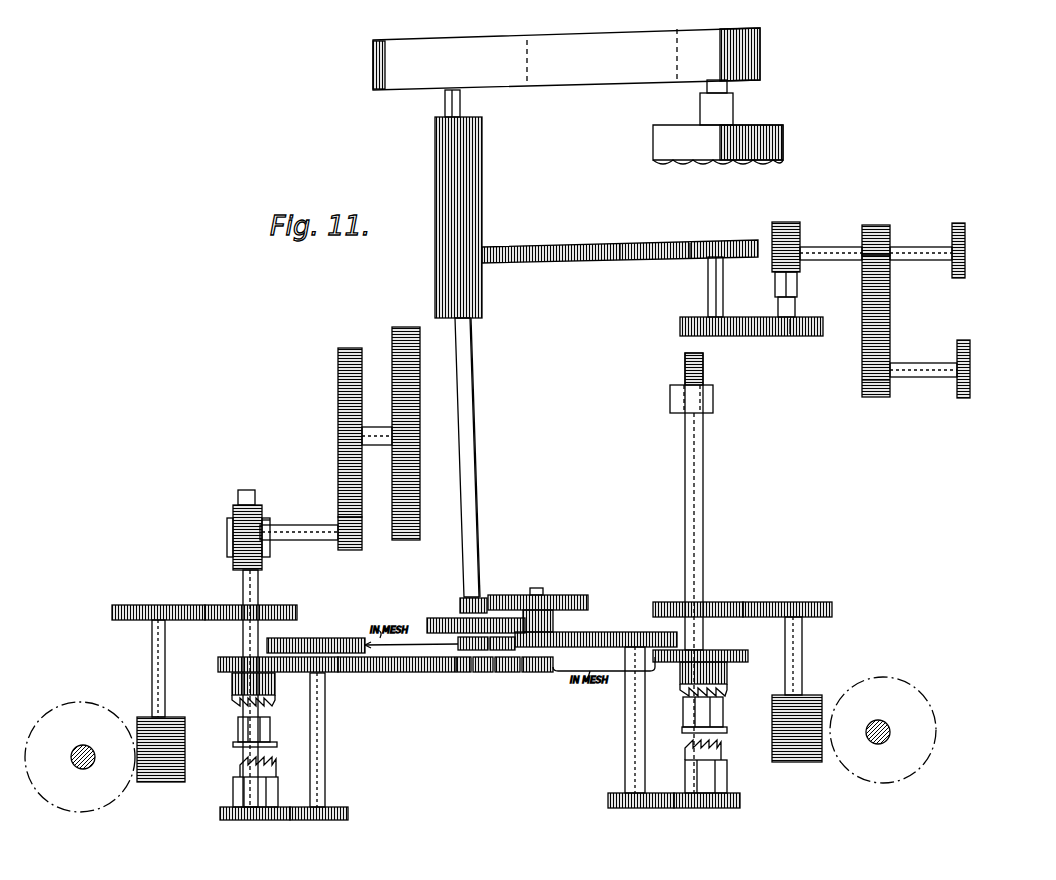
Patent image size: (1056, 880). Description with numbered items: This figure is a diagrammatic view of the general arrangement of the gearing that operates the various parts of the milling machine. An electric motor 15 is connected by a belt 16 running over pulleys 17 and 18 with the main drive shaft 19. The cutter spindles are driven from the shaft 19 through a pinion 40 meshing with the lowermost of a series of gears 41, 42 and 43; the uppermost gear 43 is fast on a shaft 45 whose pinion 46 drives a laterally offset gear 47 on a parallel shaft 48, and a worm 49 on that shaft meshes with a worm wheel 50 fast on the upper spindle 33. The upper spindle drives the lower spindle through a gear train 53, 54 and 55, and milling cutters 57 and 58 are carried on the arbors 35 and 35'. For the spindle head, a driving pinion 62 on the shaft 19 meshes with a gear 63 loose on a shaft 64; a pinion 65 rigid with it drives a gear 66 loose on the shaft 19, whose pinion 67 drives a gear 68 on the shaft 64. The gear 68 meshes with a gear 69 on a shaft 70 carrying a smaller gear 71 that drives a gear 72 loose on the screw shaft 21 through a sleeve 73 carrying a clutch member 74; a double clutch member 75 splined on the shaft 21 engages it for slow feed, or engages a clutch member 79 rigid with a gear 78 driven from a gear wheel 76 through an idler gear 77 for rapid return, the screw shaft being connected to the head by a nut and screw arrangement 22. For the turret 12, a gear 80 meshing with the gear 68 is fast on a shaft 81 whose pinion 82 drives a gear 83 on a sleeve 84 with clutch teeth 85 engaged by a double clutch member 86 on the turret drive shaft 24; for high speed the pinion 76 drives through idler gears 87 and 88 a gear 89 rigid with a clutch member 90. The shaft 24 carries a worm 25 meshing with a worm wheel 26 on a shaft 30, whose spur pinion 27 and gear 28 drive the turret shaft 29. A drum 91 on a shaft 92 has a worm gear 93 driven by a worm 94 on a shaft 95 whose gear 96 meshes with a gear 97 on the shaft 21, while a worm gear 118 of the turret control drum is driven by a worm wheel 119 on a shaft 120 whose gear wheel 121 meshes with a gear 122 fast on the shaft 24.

The rotary work support or turret 12 is at (420, 362).
The electric motor 15 is at (783, 128).
The belt 16 is at (608, 80).
The pulley 17 is at (677, 80).
The pulley 18 is at (527, 85).
The main drive shaft 19 is at (445, 105).
The screw shaft 21 is at (703, 528).
The nut and screw arrangement 22 is at (713, 403).
The turret drive shaft 24 is at (248, 490).
The worm 25 is at (265, 525).
The worm wheel 26 is at (233, 515).
The spur pinion 27 is at (355, 550).
The gear 28 is at (395, 420).
The turret shaft 29 is at (375, 427).
The shaft 30 is at (305, 540).
The upper cutter spindle 33 is at (830, 247).
The cutter-carrying arbor 35 is at (921, 269).
The cutter-carrying arbor 35' is at (923, 389).
The pinion 40 is at (435, 215).
The gear 41 is at (560, 247).
The gear 42 is at (650, 245).
The gear 43 is at (730, 242).
The shaft 45 is at (708, 292).
The pinion 46 is at (680, 327).
The gear 47 is at (795, 336).
The shaft 48 is at (795, 306).
The worm 49 is at (775, 270).
The worm wheel 50 is at (797, 280).
The gear 53 is at (890, 238).
The gear 54 is at (890, 300).
The gear 55 is at (880, 397).
The milling cutter 57 is at (965, 243).
The milling cutter 58 is at (970, 355).
The driving pinion 62 is at (485, 598).
The gear 63 is at (560, 595).
The shaft 64 is at (540, 588).
The pinion 65 is at (553, 620).
The gear 66 is at (440, 618).
The pinion 67 is at (445, 672).
The gear 68 is at (520, 672).
The gear 69 is at (640, 632).
The shaft 70 is at (625, 738).
The gear 71 is at (608, 805).
The gear 72 is at (740, 800).
The sleeve 73 is at (727, 780).
The clutch member 74 is at (727, 752).
The double clutch member 75 is at (725, 712).
The gear wheel 76 is at (478, 672).
The idler gear 77 is at (505, 672).
The gear 78 is at (740, 650).
The clutch member 79 is at (727, 685).
The gear 80 is at (350, 638).
The shaft 81 is at (325, 760).
The pinion 82 is at (348, 815).
The gear 83 is at (220, 820).
The sleeve 84 is at (233, 800).
The clutch member 85 is at (238, 770).
The double clutch member 86 is at (238, 736).
The idler gear 87 is at (390, 672).
The idler gear 88 is at (355, 672).
The gear 89 is at (275, 677).
The clutch member 90 is at (232, 703).
The drum 91 is at (90, 764).
The shaft 92 is at (885, 745).
The worm gear 93 is at (905, 685).
The worm 94 is at (818, 695).
The shaft 95 is at (802, 643).
The gear 96 is at (820, 602).
The gear 97 is at (735, 602).
The worm gear 118 is at (60, 805).
The worm wheel 119 is at (150, 782).
The shaft 120 is at (152, 668).
The gear wheel 121 is at (137, 605).
The gear 122 is at (232, 605).